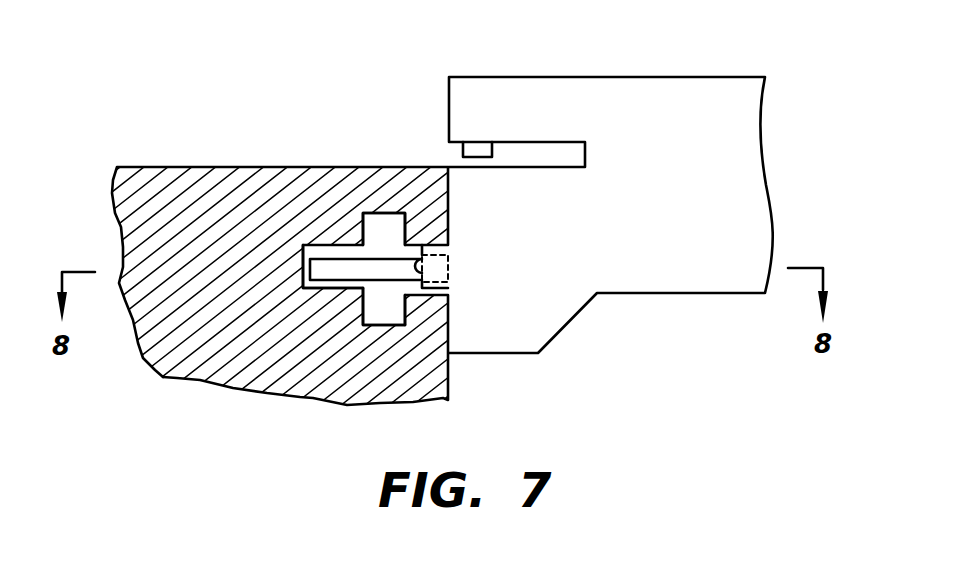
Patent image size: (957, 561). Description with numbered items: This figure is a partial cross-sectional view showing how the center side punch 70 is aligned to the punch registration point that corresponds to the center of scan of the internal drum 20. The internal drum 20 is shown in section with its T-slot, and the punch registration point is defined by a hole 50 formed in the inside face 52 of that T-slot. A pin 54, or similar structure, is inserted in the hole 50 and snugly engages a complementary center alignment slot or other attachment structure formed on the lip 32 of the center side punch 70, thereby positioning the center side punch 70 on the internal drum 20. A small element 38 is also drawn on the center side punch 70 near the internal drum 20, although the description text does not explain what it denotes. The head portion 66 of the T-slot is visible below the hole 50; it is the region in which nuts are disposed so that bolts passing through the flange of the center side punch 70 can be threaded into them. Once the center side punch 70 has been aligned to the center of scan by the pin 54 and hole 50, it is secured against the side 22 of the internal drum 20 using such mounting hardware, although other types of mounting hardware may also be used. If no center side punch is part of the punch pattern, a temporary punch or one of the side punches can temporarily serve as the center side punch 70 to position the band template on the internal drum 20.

The internal drum 20 is at (163, 331).
The side 22 is at (448, 378).
The lip 32 is at (425, 257).
The detent tab 38 is at (465, 152).
The hole 50 is at (305, 288).
The inside face 52 is at (364, 230).
The pin 54 is at (337, 268).
The head portion 66 is at (380, 318).
The center side punch 70 is at (740, 179).